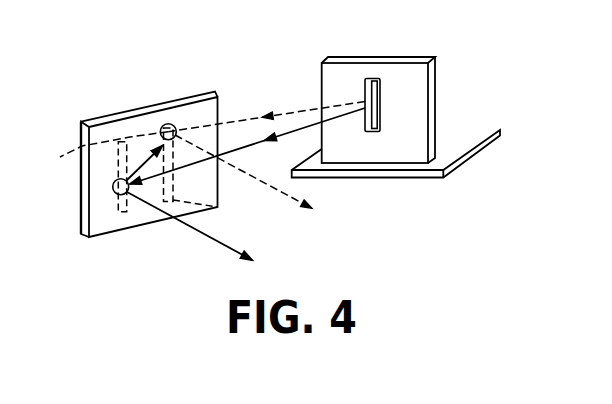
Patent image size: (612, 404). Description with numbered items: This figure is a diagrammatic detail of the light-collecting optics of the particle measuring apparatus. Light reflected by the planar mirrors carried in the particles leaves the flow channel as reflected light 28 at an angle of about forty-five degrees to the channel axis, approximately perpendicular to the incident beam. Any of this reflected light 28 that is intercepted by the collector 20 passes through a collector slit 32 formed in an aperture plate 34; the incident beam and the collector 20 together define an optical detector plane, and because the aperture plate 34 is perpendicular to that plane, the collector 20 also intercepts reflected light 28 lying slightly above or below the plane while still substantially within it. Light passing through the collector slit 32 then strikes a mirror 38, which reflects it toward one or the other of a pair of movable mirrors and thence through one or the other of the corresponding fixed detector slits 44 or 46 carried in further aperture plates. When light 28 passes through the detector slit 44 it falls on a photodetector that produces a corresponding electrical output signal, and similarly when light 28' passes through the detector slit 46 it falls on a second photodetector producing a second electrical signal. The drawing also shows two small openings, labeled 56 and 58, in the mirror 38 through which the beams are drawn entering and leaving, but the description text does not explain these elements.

The collector 20 is at (499, 144).
The reflected light 28 is at (245, 191).
The reflected light 28' is at (266, 173).
The collector slit 32 is at (380, 80).
The aperture plate 34 is at (423, 102).
The mirror 38 is at (135, 109).
The fixed detector slit 44 is at (100, 155).
The fixed detector slit 46 is at (218, 207).
The opening 56 is at (153, 160).
The opening 58 is at (113, 188).